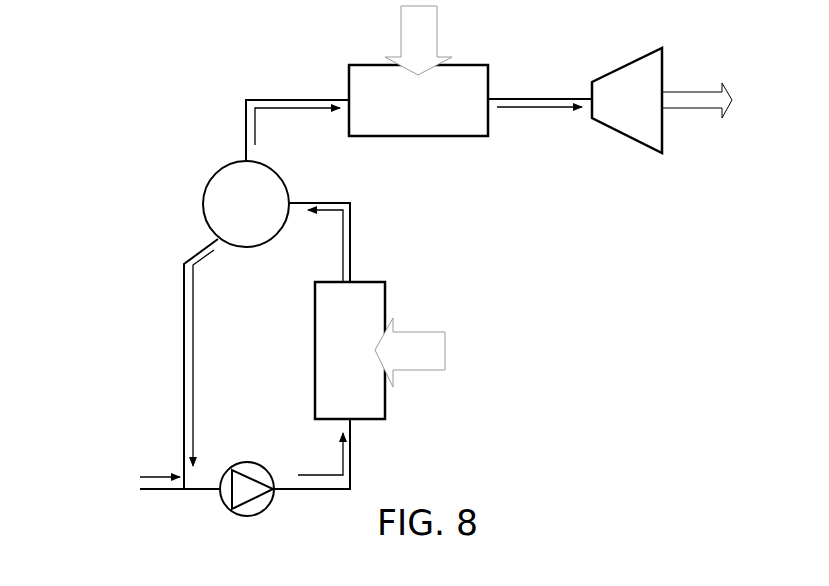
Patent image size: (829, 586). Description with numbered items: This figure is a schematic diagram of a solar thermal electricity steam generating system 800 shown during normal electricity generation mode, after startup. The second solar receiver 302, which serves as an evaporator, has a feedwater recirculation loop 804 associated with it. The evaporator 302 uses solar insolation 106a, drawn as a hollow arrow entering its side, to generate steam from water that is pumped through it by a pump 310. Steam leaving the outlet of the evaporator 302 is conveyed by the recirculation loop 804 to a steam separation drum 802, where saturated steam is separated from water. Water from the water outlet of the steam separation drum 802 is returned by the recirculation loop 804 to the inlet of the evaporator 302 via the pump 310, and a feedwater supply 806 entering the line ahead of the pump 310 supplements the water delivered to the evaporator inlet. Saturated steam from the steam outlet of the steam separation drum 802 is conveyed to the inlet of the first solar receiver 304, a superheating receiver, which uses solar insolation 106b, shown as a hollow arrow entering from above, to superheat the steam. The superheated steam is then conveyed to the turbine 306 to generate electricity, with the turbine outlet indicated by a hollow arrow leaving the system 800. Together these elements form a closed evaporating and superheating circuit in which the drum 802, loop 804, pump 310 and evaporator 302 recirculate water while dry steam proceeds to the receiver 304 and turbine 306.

The solar thermal electricity steam generating system 800 is at (390, 280).
The solar insolation 106b is at (368, 40).
The first solar receiver 304 is at (418, 100).
The turbine 306 is at (662, 100).
The steam separation drum 802 is at (246, 204).
The feedwater recirculation loop 804 is at (374, 222).
The second solar receiver 302 is at (350, 350).
The solar insolation 106a is at (443, 339).
The feedwater supply 806 is at (161, 515).
The pump 310 is at (241, 438).